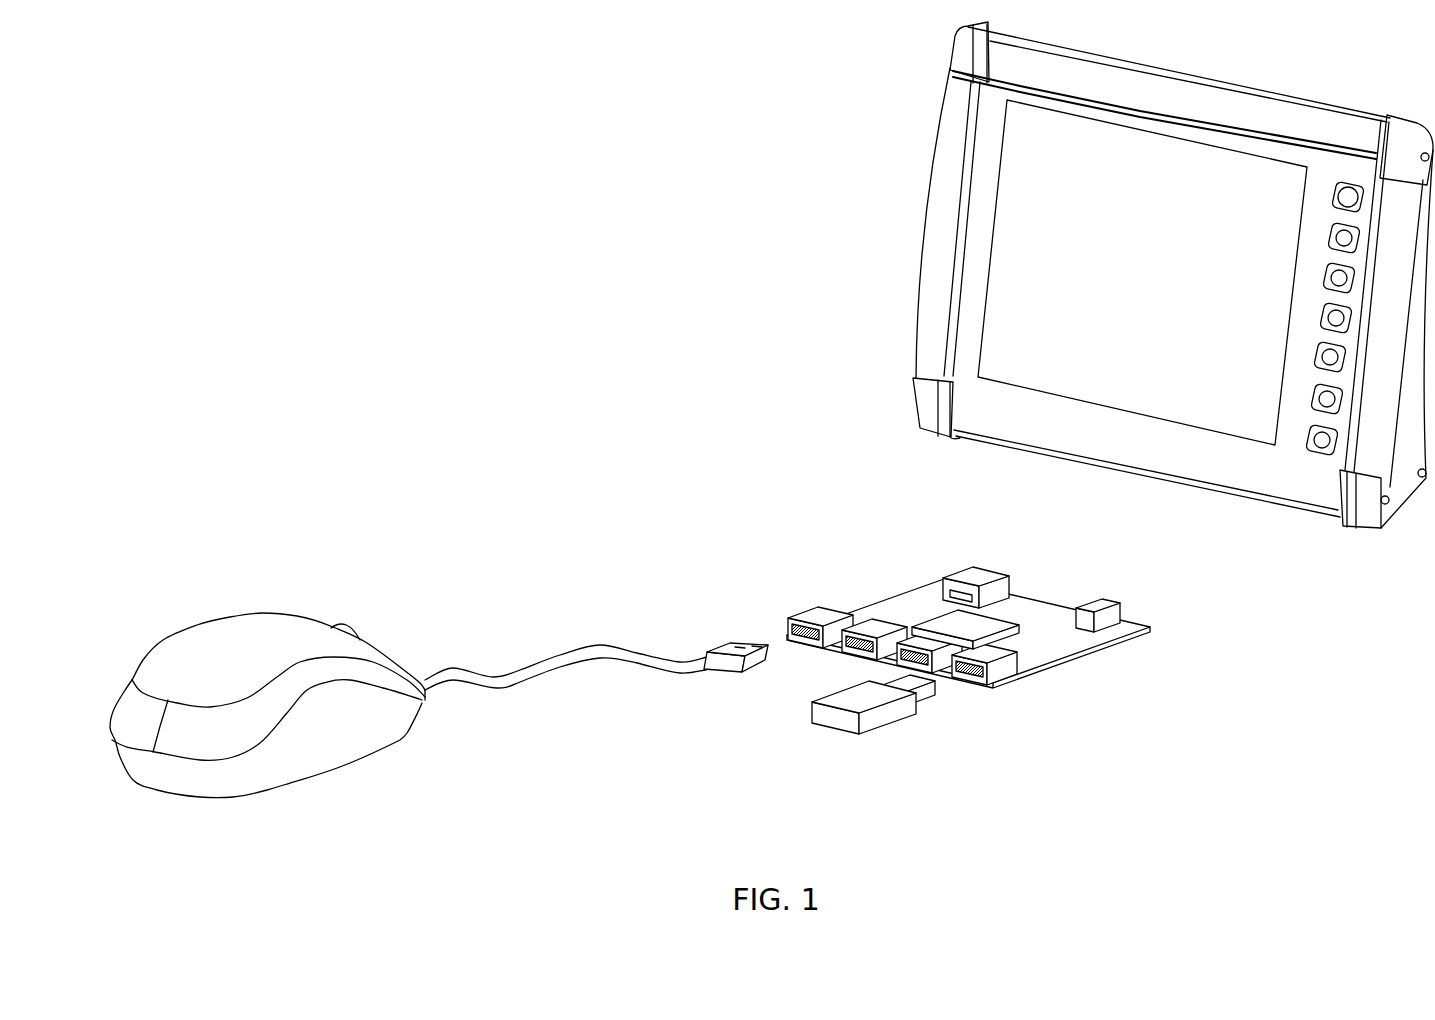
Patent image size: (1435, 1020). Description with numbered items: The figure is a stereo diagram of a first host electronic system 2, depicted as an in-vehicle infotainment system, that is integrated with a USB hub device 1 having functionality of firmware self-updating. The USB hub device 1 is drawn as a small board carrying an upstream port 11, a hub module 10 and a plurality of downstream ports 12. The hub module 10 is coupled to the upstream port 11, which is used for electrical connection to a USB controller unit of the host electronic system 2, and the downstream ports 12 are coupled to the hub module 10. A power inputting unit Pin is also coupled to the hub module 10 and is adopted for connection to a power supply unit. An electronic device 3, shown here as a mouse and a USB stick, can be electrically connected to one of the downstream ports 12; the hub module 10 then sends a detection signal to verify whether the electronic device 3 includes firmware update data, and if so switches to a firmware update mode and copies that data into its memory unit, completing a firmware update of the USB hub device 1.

The USB hub device 1 is at (983, 592).
The first host electronic system 2 is at (932, 42).
The electronic device 3 is at (420, 735).
The hub module 10 is at (1014, 603).
The upstream port 11 is at (986, 570).
The downstream ports 12 is at (808, 612).
The power inputting unit Pin is at (1123, 606).